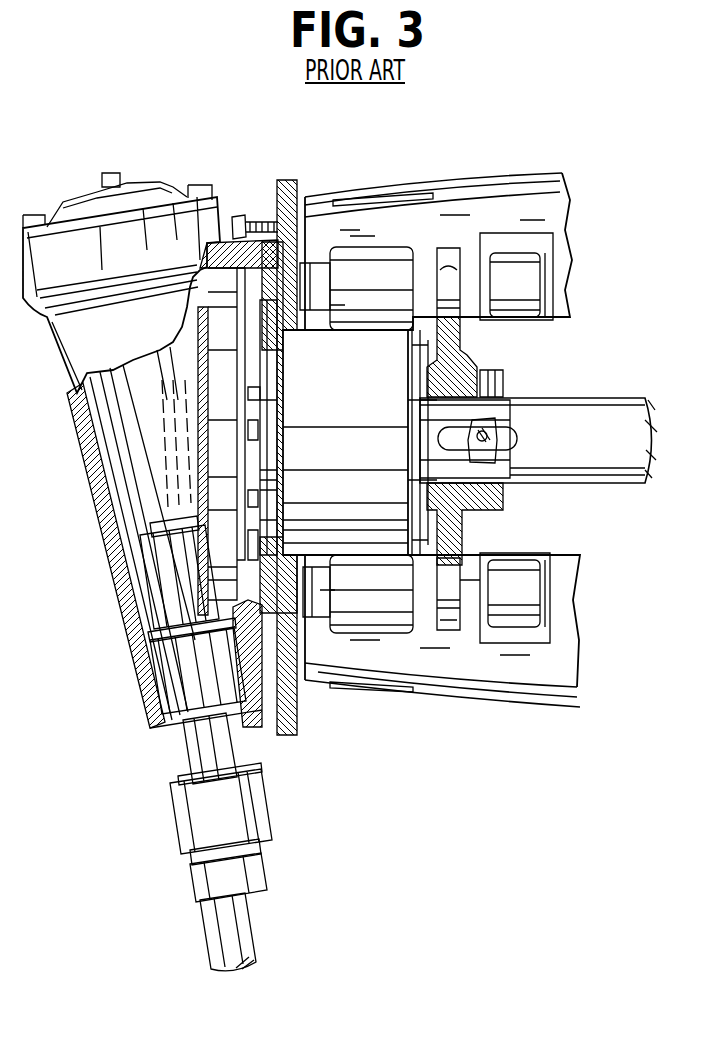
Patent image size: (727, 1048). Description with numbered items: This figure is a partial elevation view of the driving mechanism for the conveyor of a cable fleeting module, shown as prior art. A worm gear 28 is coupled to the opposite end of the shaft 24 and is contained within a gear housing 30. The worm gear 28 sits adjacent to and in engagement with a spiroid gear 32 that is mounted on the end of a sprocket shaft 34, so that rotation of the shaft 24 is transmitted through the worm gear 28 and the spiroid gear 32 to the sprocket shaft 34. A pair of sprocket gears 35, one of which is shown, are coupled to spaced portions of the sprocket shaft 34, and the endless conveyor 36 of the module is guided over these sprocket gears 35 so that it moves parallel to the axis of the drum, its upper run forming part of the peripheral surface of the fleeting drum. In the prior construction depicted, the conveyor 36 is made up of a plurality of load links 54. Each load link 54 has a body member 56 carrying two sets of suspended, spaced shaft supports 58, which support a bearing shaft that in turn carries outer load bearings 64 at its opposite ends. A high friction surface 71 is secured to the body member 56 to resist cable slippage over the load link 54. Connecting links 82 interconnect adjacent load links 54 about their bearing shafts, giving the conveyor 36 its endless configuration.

The shaft 24 is at (232, 937).
The worm gear 28 is at (165, 578).
The gear housing 30 is at (95, 493).
The spiroid gear 32 is at (222, 438).
The sprocket shaft 34 is at (592, 440).
The sprocket gear 35 is at (465, 346).
The endless conveyor 36 is at (454, 464).
The load link 54 is at (352, 190).
The body member 56 is at (528, 680).
The shaft support 58 is at (449, 565).
The outer load bearing 64 is at (363, 612).
The high friction surface 71 is at (462, 698).
The connecting link 82 is at (518, 580).